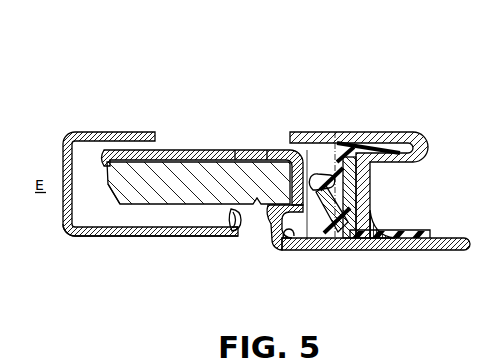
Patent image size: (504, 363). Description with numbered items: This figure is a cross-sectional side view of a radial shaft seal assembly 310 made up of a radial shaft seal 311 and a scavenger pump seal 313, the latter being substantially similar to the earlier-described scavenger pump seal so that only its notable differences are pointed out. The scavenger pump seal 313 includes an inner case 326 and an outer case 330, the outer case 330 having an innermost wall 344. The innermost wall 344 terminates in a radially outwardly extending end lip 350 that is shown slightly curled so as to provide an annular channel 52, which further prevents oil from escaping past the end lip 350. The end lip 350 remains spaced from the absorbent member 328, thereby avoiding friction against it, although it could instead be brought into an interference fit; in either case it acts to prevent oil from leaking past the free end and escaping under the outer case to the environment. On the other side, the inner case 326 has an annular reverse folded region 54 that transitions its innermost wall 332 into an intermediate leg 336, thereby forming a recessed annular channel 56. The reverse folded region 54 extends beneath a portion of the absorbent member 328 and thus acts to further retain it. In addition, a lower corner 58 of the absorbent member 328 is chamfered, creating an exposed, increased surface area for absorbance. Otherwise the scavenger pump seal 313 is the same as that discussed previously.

The radial shaft seal assembly 310 is at (277, 75).
The radial shaft seal 311 is at (398, 114).
The scavenger pump seal 313 is at (178, 129).
The inner case 326 is at (434, 251).
The absorbent member 328 is at (202, 176).
The outer case 330 is at (124, 131).
The innermost wall 332 is at (352, 251).
The intermediate leg 336 is at (323, 178).
The innermost wall 344 is at (107, 238).
The end lip 350 is at (248, 220).
The annular channel 52 is at (229, 219).
The reverse folded region 54 is at (260, 232).
The recessed annular channel 56 is at (285, 232).
The lower corner 58 is at (111, 191).